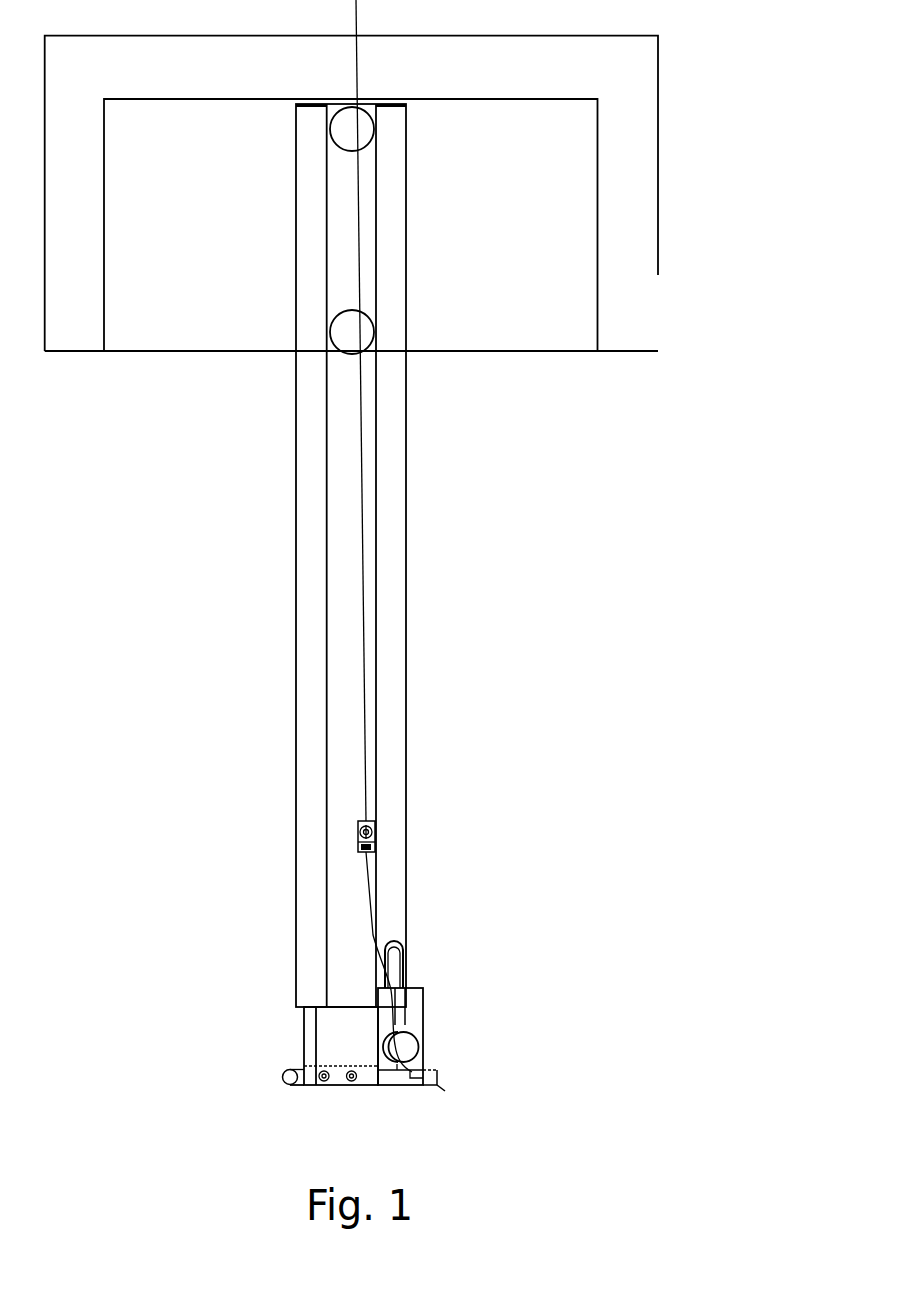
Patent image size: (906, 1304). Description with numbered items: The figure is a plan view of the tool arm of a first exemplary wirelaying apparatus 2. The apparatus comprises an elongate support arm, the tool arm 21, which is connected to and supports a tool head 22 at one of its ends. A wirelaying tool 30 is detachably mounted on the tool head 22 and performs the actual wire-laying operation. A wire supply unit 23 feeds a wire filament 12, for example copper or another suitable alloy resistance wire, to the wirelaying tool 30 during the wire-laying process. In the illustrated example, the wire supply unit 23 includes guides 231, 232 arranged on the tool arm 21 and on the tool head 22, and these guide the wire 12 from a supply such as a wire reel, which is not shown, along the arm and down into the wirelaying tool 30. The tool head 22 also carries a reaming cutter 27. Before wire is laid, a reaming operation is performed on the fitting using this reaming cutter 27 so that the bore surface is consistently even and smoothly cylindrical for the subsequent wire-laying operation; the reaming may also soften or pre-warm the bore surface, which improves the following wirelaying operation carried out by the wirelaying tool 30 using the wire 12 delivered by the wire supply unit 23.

The wirelaying apparatus 2 is at (351, 278).
The tool arm 21 is at (478, 555).
The wire filament 12 is at (513, 536).
The guide 231 is at (513, 807).
The guide 232 is at (521, 1006).
The wire supply unit 23 is at (755, 848).
The tool head 22 is at (255, 1015).
The reaming cutter 27 is at (220, 1122).
The wirelaying tool 30 is at (496, 1123).